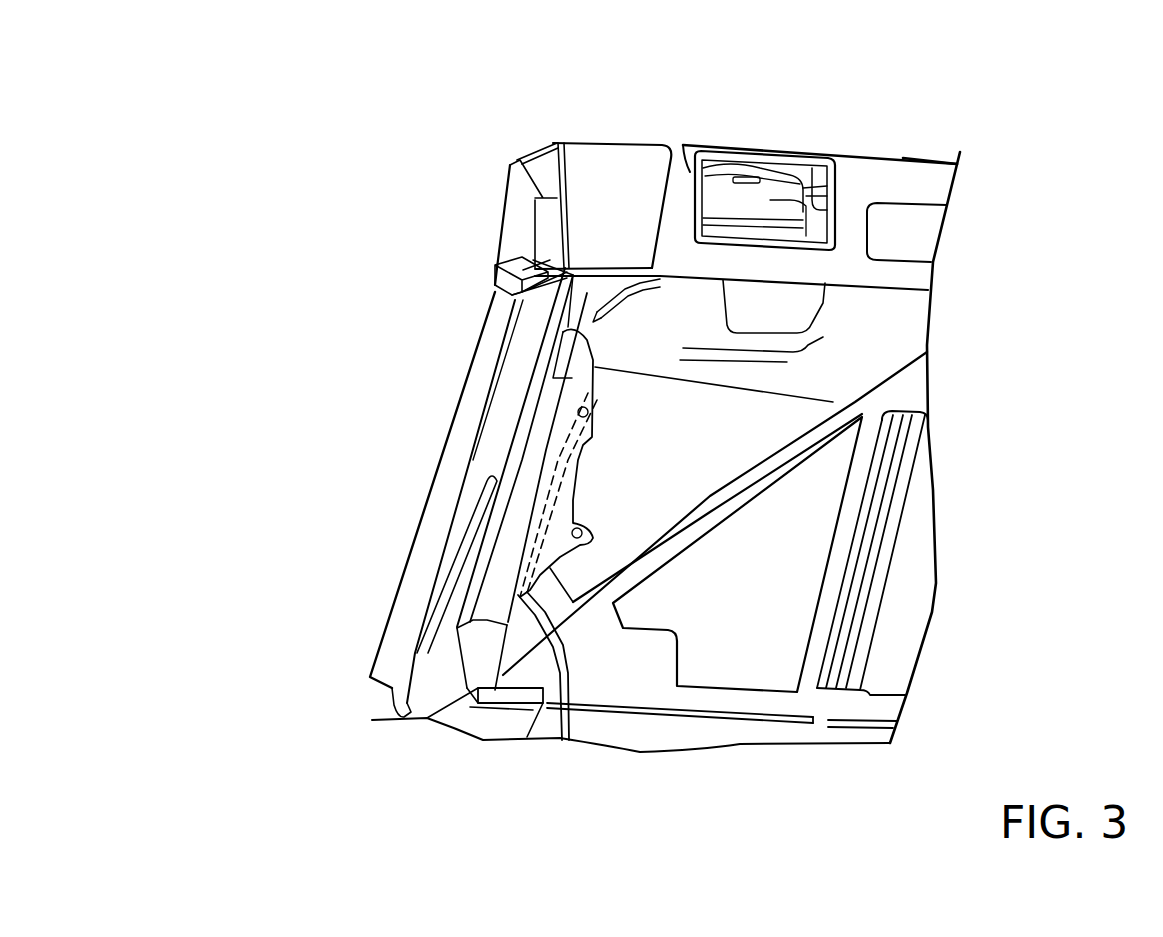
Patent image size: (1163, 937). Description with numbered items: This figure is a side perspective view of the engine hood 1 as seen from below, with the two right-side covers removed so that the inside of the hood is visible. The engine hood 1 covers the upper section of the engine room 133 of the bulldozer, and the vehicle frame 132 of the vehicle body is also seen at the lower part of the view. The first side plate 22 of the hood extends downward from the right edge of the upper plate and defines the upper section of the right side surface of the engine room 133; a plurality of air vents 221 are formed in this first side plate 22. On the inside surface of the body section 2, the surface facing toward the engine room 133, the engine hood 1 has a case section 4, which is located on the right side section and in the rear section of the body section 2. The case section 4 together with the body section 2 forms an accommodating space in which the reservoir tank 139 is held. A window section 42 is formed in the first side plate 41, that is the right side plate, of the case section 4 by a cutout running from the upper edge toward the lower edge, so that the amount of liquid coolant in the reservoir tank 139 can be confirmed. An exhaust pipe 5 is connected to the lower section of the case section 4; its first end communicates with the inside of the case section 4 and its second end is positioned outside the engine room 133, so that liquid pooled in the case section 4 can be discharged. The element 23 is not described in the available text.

The engine hood 1 is at (849, 120).
The body section 2 is at (906, 157).
The first side plate 22 is at (933, 182).
The air vents 221 is at (923, 232).
The housing box 23 is at (713, 198).
The reservoir tank 139 is at (780, 197).
The case section 4 is at (673, 320).
The first side plate of the case section 41 is at (700, 289).
The window section 42 is at (742, 318).
The exhaust pipe 5 is at (593, 370).
The vehicle frame 132 is at (387, 688).
The engine room 133 is at (805, 480).